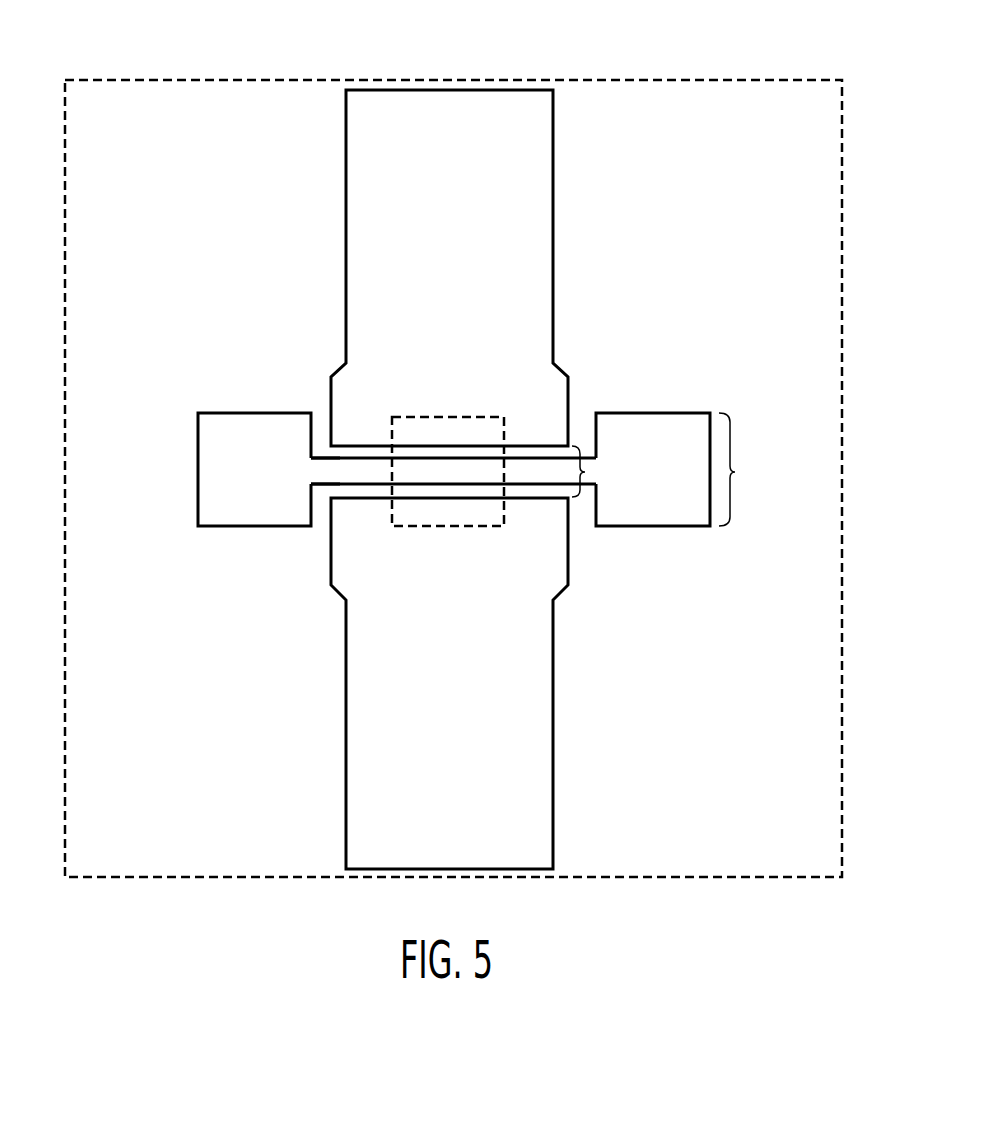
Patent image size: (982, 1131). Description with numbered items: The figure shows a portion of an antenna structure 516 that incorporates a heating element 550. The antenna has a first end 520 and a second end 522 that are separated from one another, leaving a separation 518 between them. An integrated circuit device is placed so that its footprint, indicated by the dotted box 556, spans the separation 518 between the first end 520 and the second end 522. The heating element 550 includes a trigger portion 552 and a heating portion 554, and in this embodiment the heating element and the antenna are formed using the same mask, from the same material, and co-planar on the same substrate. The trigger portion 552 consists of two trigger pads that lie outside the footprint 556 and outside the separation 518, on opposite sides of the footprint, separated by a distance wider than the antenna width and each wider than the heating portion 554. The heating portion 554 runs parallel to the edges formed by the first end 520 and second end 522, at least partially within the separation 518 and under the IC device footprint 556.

The antenna structure 516 is at (718, 80).
The separation 518 is at (585, 472).
The first end 520 is at (553, 258).
The second end 522 is at (553, 703).
The heating element 550 is at (735, 472).
The trigger portion 552 is at (268, 518).
The heating portion 554 is at (329, 470).
The footprint of the IC device 556 is at (503, 508).